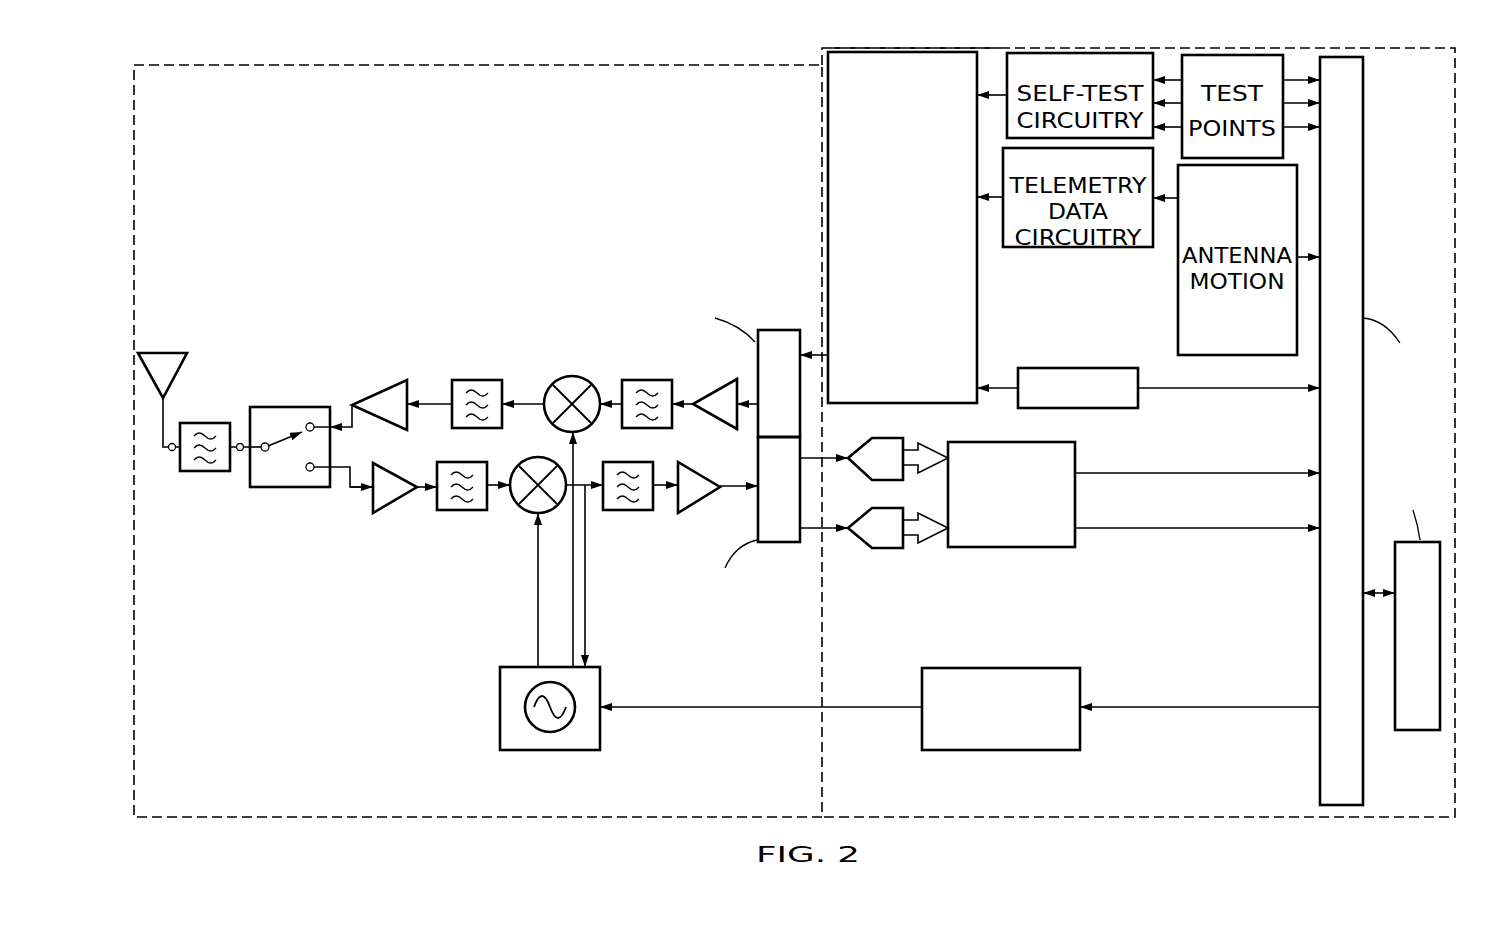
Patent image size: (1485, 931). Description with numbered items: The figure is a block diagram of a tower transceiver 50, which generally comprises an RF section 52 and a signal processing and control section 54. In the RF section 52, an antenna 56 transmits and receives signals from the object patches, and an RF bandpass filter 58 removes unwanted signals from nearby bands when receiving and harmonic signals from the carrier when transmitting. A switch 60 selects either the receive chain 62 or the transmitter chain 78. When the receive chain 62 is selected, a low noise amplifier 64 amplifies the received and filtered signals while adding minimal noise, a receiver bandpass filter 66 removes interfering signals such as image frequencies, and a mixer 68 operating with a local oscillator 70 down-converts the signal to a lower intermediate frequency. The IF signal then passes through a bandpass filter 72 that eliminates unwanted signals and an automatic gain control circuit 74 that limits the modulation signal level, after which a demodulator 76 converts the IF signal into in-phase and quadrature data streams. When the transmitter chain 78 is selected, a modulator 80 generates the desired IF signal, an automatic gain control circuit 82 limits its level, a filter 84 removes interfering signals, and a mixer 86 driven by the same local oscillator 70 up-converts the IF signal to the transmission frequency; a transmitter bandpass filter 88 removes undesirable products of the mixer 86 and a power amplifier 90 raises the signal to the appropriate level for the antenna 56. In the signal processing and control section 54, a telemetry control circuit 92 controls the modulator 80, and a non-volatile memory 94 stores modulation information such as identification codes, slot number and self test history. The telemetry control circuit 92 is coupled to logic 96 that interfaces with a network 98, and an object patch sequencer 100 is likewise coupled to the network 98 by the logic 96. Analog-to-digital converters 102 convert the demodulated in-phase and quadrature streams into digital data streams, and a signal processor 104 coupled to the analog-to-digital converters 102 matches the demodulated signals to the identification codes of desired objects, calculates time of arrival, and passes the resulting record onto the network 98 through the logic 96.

The tower transceiver 50 is at (868, 30).
The RF section 52 is at (505, 65).
The signal processing and control section 54 is at (1203, 48).
The antenna 56 is at (183, 353).
The RF bandpass filter 58 is at (207, 423).
The switch 60 is at (285, 407).
The receive chain 62 is at (466, 585).
The low noise amplifier 64 is at (385, 512).
The receiver bandpass filter 66 is at (450, 510).
The mixer 68 is at (525, 508).
The local oscillator 70 is at (600, 740).
The bandpass filter 72 is at (628, 510).
The automatic gain control circuit 74 is at (693, 510).
The demodulator 76 is at (793, 543).
The transmitter chain 78 is at (501, 295).
The modulator 80 is at (788, 330).
The automatic gain control circuit 82 is at (717, 390).
The filter 84 is at (648, 380).
The mixer 86 is at (570, 376).
The transmitter bandpass filter 88 is at (477, 380).
The power amplifier 90 is at (376, 387).
The telemetry control circuit 92 is at (977, 300).
The non-volatile memory 94 is at (1112, 408).
The logic 96 is at (1363, 278).
The network 98 is at (1418, 730).
The object patch sequencer 100 is at (1080, 683).
The analog-to-digital converters 102 is at (882, 548).
The signal processor 104 is at (1010, 548).